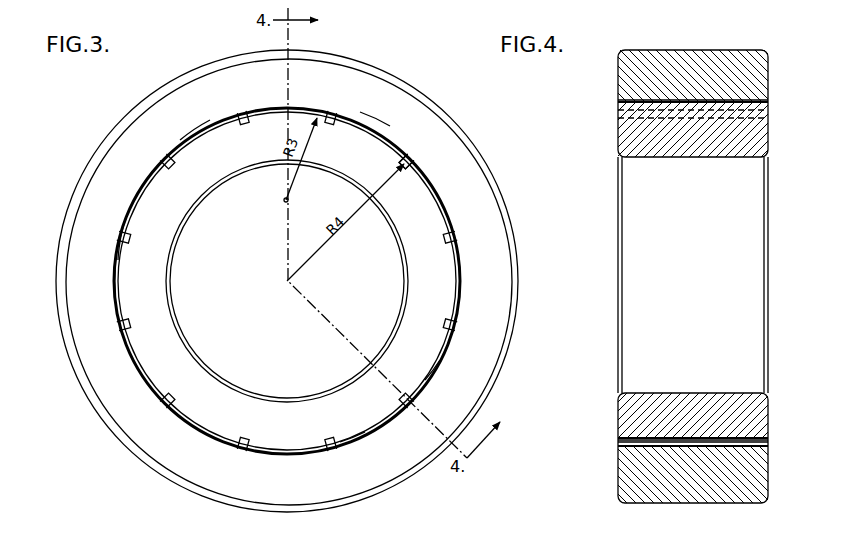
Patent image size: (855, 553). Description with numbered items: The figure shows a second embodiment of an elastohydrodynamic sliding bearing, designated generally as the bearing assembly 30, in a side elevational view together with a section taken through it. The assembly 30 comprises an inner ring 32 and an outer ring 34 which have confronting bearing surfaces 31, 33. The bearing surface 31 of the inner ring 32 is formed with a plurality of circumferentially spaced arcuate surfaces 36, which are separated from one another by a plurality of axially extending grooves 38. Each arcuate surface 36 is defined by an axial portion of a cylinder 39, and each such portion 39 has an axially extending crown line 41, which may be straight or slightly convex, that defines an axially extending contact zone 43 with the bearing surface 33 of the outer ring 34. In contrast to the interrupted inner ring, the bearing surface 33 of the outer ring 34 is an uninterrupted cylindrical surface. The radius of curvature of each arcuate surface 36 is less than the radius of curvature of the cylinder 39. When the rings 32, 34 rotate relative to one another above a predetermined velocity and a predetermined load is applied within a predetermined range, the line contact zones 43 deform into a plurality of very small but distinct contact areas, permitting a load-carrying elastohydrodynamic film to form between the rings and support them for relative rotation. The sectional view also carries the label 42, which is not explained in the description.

In FIG. 3, the elastohydrodynamic sliding bearing assembly 30 is at (115, 128).
In FIG. 4, the elastohydrodynamic sliding bearing assembly 30 is at (680, 50).
In FIG. 3, the bearing surface of inner ring 31 is at (418, 205).
In FIG. 4, the bearing surface of inner ring 31 is at (745, 102).
In FIG. 3, the inner ring 32 is at (287, 281).
In FIG. 4, the inner ring 32 is at (697, 150).
In FIG. 3, the bearing surface of outer ring 33 is at (412, 158).
In FIG. 4, the bearing surface of outer ring 33 is at (648, 100).
In FIG. 3, the outer ring 34 is at (117, 444).
In FIG. 4, the outer ring 34 is at (762, 84).
In FIG. 3, the arcuate surfaces 36 is at (127, 222).
In FIG. 3, the axially extending grooves 38 is at (246, 128).
In FIG. 4, the axially extending grooves 38 is at (745, 118).
In FIG. 3, the cylinder portions 39 is at (461, 310).
In FIG. 3, the crown line 41 is at (193, 132).
In FIG. 4, the groove 42 is at (620, 443).
In FIG. 3, the contact zone 43 is at (377, 120).